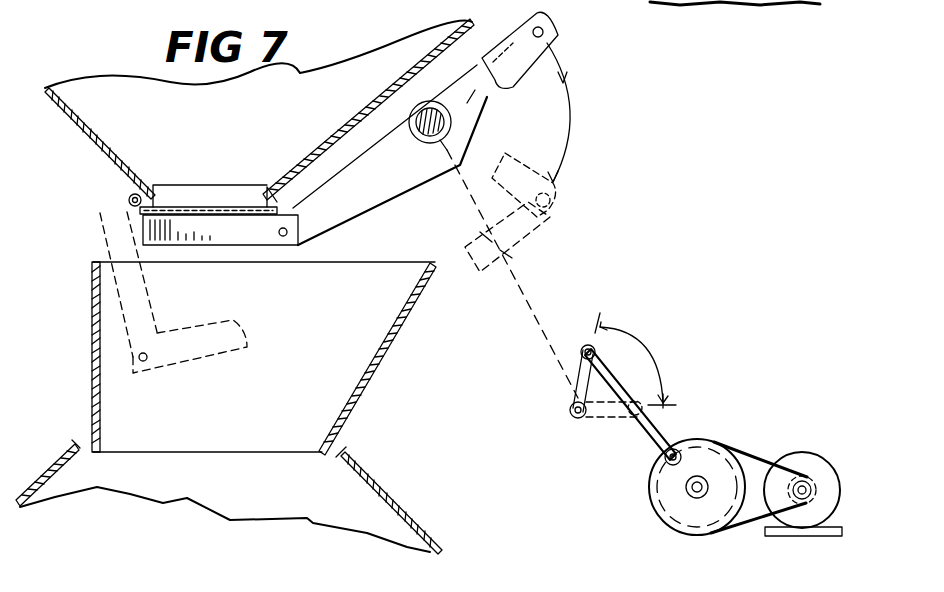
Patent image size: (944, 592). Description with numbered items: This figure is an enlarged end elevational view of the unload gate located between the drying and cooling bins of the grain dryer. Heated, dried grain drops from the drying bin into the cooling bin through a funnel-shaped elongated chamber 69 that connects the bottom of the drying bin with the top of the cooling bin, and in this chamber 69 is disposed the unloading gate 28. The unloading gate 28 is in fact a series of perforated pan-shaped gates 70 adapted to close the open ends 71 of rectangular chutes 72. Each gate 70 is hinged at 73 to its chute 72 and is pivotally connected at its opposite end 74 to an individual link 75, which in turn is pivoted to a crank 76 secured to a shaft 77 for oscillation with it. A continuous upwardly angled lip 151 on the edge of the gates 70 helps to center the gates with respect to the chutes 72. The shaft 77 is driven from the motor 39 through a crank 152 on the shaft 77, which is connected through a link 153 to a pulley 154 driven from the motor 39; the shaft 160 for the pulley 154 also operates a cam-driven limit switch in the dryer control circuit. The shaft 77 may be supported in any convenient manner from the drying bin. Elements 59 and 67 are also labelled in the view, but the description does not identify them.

The unloading gate 28 is at (192, 250).
The motor 39 is at (807, 463).
The frame member 59 is at (703, 0).
The frame legs 67 is at (97, 140).
The funnel-shaped elongated chamber 69 is at (383, 353).
The perforated pan-shaped gates 70 is at (212, 210).
The open ends 71 is at (245, 200).
The rectangular chutes 72 is at (155, 207).
The hinge 73 is at (129, 198).
The opposite ends 74 is at (283, 236).
The links 75 is at (380, 188).
The crank 76 is at (503, 43).
The shaft 77 is at (409, 127).
The upwardly angled lip 151 is at (317, 213).
The crank 152 is at (573, 380).
The link 153 is at (662, 428).
The pulley 154 is at (625, 468).
The shaft 160 is at (692, 492).